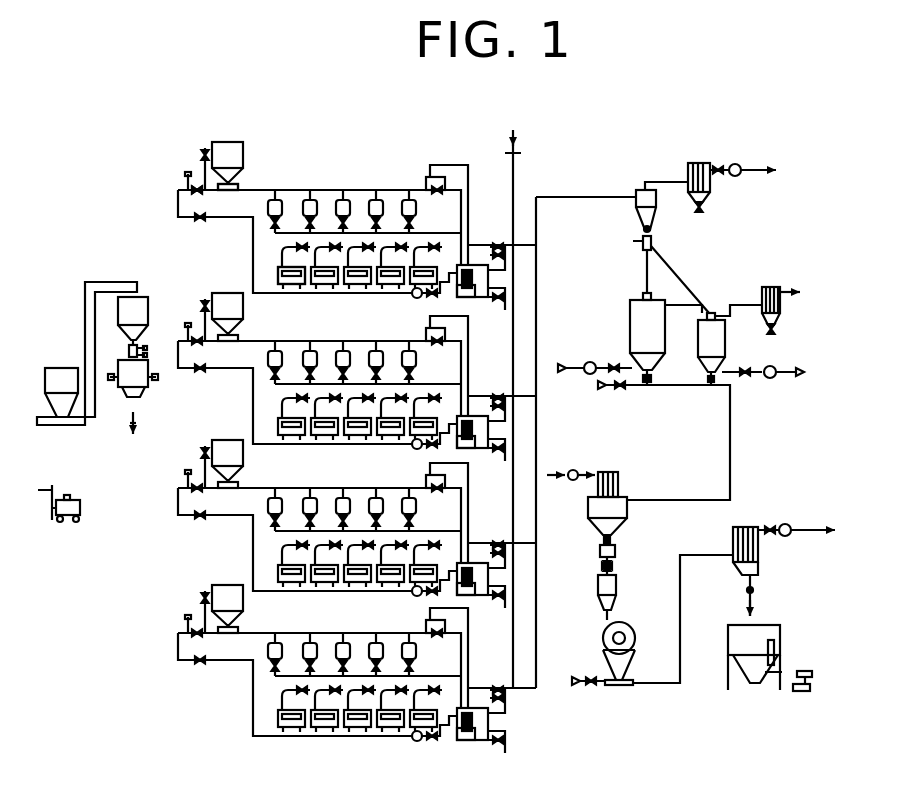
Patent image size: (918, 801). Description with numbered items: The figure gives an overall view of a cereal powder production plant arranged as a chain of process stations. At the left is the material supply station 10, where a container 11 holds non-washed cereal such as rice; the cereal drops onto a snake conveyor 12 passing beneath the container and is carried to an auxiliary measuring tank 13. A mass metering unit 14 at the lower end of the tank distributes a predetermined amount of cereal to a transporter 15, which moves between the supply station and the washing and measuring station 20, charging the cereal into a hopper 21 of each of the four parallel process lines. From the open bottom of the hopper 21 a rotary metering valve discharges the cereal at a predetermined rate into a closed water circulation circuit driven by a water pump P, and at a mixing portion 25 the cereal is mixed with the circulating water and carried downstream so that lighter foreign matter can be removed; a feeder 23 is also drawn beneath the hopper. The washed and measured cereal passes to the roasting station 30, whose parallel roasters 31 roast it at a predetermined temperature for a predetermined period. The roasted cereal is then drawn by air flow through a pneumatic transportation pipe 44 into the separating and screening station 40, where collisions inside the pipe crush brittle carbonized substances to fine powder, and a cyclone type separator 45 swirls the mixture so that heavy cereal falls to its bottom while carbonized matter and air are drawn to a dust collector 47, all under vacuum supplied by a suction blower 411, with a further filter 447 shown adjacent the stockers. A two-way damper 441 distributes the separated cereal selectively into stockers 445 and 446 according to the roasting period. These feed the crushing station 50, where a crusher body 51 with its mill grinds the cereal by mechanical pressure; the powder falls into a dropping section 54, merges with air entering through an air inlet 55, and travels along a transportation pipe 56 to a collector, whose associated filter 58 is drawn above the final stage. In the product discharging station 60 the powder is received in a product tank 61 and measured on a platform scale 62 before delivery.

The material supply station 10 is at (77, 294).
The cereal material container 11 is at (50, 380).
The snake conveyor 12 is at (83, 330).
The auxiliary measuring tank 13 is at (145, 298).
The mass metering unit 14 is at (140, 345).
The transporter 15 is at (150, 373).
The washing and measuring station 20 is at (240, 231).
The hopper 21 is at (244, 160).
The feeder 23 is at (242, 182).
The mixing portion 25 is at (234, 194).
The roasting station 30 is at (274, 274).
The roaster 31 is at (300, 286).
The water pump P is at (414, 298).
The separating and screening station 40 is at (689, 315).
The pneumatic transportation pipe 44 is at (582, 198).
The cyclone type separator 45 is at (651, 216).
The two-way damper 441 is at (641, 246).
The stocker 445 is at (634, 323).
The stocker 446 is at (727, 346).
The bag filter 447 is at (783, 305).
The dust collector 47 is at (706, 197).
The suction blower 411 is at (727, 170).
The crushing station 50 is at (630, 491).
The crusher body 51 is at (633, 626).
The dropping section 54 is at (620, 686).
The air inlet 55 is at (576, 688).
The transportation pipe 56 is at (682, 682).
The bag filter 58 is at (760, 566).
The product discharging station 60 is at (771, 612).
The product tank 61 is at (770, 637).
The platform scale 62 is at (815, 681).